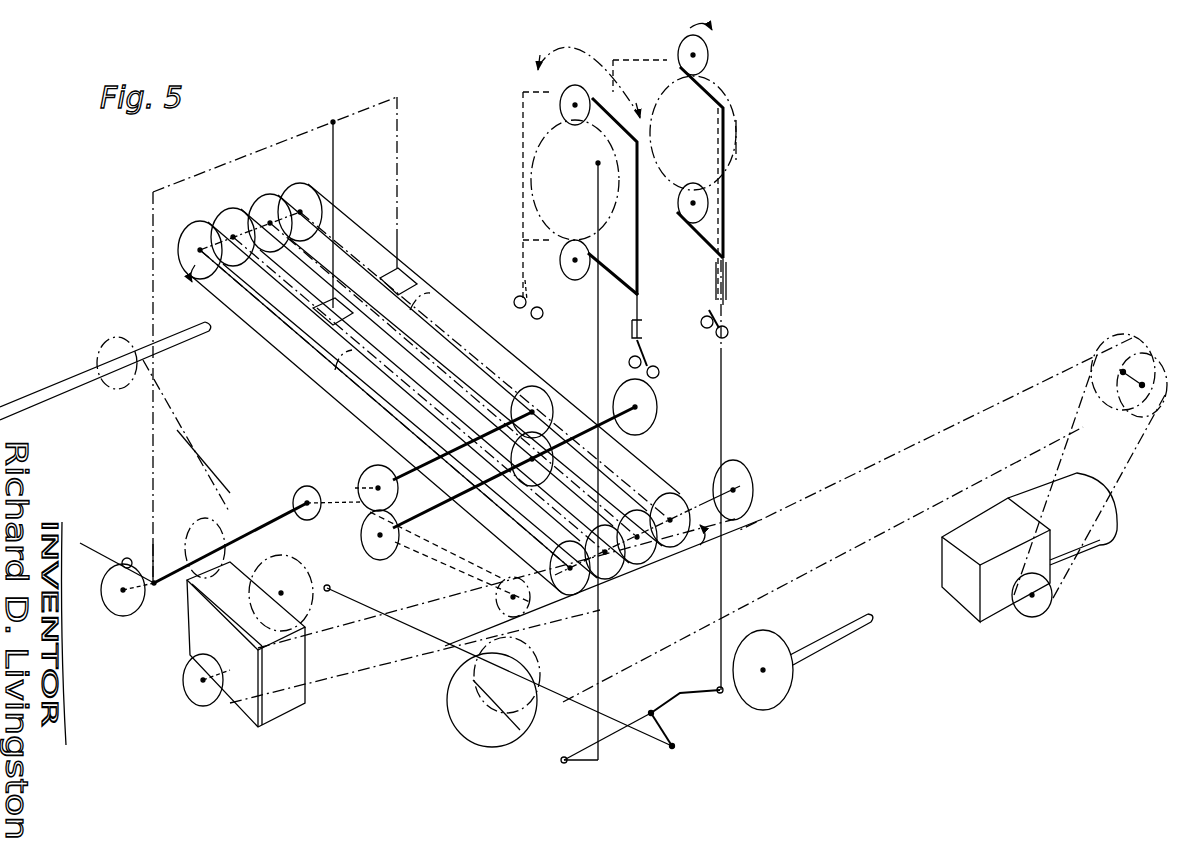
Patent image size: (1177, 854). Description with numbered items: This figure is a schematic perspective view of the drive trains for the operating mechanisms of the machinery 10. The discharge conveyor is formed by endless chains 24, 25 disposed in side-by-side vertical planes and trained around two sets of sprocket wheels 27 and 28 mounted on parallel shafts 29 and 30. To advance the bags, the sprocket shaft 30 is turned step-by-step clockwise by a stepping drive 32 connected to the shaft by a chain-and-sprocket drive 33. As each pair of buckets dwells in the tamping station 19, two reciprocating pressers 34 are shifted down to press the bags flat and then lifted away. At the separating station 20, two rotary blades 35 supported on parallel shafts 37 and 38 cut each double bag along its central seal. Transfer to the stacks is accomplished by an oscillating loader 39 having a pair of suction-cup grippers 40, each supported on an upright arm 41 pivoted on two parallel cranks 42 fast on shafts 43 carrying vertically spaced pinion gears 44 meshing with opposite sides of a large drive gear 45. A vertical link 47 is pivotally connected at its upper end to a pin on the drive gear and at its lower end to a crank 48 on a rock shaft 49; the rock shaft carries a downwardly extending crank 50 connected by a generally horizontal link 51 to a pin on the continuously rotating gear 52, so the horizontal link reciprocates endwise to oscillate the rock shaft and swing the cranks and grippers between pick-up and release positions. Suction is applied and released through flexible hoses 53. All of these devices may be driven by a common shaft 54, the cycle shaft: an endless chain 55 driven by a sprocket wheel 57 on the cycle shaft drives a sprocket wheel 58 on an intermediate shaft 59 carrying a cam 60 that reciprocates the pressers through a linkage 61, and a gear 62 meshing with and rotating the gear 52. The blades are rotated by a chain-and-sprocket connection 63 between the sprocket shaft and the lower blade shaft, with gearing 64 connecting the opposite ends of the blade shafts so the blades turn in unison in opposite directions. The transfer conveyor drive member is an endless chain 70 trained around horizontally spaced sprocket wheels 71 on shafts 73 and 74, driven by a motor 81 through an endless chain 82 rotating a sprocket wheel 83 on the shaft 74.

The conveyor apparatus 10 is at (977, 362).
The tamping station 19 is at (410, 236).
The separating station 20 is at (505, 480).
The endless chain 24 is at (430, 286).
The endless chain 25 is at (343, 362).
The sprocket wheels 27 is at (190, 288).
The sprocket wheels 28 is at (647, 537).
The shaft 29 is at (268, 215).
The sprocket shaft 30 is at (620, 546).
The stepping drive 32 is at (268, 720).
The chain-and-sprocket drive 33 is at (370, 672).
The reciprocating pressers 34 is at (318, 316).
The rotary blades 35 is at (548, 420).
The shaft 37 is at (430, 458).
The shaft 38 is at (440, 505).
The oscillating loader 39 is at (738, 252).
The suction-cup grippers 40 is at (516, 312).
The upright arm 41 is at (640, 318).
The cranks 42 is at (523, 210).
The shafts 43 is at (680, 202).
The pinion gears 44 is at (706, 55).
The drive gear 45 is at (738, 140).
The vertical link 47 is at (590, 362).
The crank 48 is at (590, 760).
The rock shaft 49 is at (666, 700).
The crank 50 is at (678, 745).
The horizontal link 51 is at (632, 730).
The gear 52 is at (298, 570).
The flexible hoses 53 is at (714, 292).
The common shaft 54 is at (58, 383).
The endless chain 55 is at (148, 425).
The sprocket wheel 57 is at (123, 390).
The sprocket wheel 58 is at (268, 492).
The intermediate shaft 59 is at (172, 575).
The cam 60 is at (136, 612).
The linkage 61 is at (152, 505).
The gear 62 is at (195, 520).
The chain-and-sprocket connection 63 is at (738, 457).
The gearing 64 is at (362, 502).
The endless chain 70 is at (912, 432).
The sprocket wheels 71 is at (538, 662).
The shaft 73 is at (500, 712).
The shaft 74 is at (1133, 378).
The motor 81 is at (1095, 540).
The endless chain 82 is at (1133, 448).
The sprocket wheel 83 is at (1140, 412).